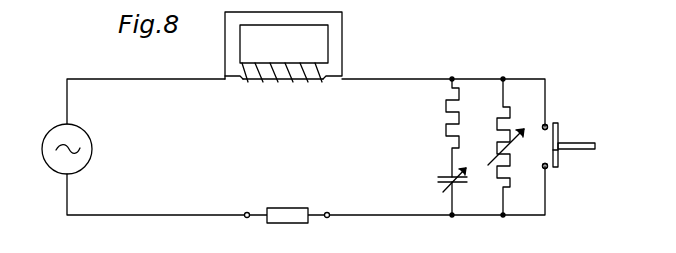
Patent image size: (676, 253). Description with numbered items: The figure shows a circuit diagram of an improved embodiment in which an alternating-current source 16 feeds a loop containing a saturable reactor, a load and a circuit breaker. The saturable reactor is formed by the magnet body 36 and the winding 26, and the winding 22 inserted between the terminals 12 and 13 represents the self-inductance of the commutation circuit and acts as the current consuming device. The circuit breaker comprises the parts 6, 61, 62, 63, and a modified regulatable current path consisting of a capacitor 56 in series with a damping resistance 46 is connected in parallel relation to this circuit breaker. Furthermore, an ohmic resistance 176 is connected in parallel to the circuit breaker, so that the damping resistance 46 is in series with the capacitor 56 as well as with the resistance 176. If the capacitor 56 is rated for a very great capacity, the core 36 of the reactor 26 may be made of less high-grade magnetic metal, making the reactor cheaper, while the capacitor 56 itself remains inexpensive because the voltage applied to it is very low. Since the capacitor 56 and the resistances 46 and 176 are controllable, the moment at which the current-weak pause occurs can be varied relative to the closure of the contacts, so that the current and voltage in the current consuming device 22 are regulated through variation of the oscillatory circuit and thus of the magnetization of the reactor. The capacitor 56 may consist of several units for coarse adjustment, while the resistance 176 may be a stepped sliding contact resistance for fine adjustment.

The alternating-current source 16 is at (86, 143).
The magnet body 36 is at (226, 49).
The winding of the saturable reactor 26 is at (283, 79).
The terminal 13 is at (247, 212).
The winding 22 is at (284, 213).
The terminal 12 is at (329, 212).
The damping resistance 46 is at (446, 124).
The capacitor 56 is at (463, 182).
The ohmic resistance 176 is at (500, 143).
The part of the circuit breaker 62 is at (543, 125).
The part of the circuit breaker 63 is at (544, 168).
The part of the circuit breaker 6 is at (574, 143).
The part of the circuit breaker 61 is at (559, 162).